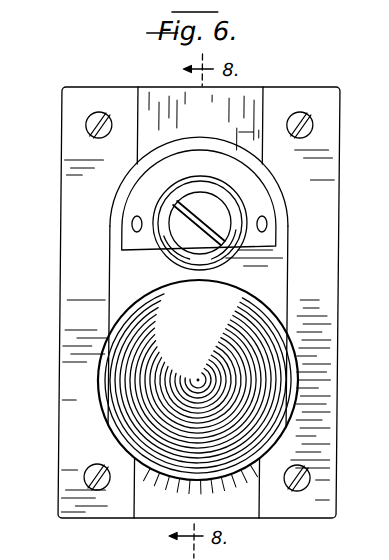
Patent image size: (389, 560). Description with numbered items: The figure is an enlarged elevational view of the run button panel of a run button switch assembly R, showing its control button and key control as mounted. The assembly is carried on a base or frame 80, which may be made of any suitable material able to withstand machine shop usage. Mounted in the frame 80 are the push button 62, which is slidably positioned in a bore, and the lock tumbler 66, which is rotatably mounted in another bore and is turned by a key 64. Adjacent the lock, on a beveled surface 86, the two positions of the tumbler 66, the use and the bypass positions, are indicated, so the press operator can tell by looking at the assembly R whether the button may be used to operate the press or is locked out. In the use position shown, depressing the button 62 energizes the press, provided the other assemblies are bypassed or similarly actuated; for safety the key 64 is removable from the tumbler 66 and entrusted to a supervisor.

The push button 62 is at (210, 366).
The key 64 is at (187, 219).
The tumbler 66 is at (189, 259).
The base or frame 80 is at (332, 169).
The beveled surface 86 is at (262, 198).
The run button switch assembly R is at (42, 191).